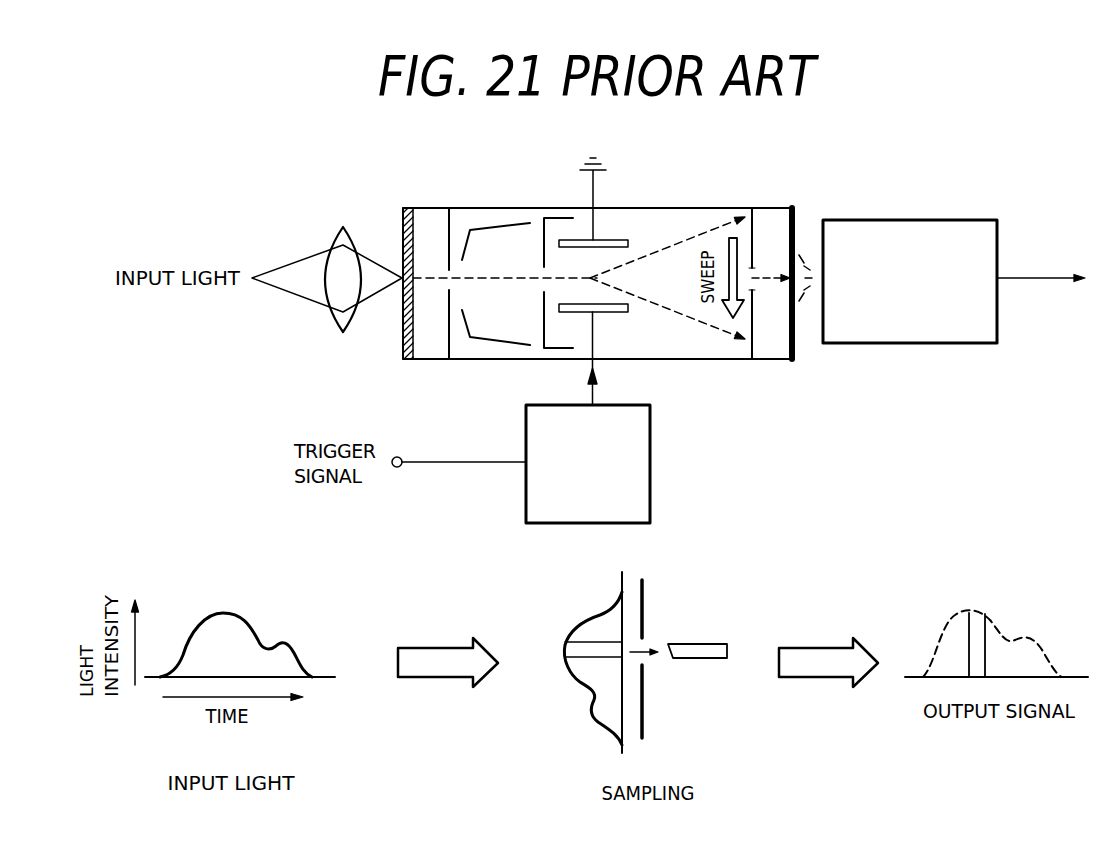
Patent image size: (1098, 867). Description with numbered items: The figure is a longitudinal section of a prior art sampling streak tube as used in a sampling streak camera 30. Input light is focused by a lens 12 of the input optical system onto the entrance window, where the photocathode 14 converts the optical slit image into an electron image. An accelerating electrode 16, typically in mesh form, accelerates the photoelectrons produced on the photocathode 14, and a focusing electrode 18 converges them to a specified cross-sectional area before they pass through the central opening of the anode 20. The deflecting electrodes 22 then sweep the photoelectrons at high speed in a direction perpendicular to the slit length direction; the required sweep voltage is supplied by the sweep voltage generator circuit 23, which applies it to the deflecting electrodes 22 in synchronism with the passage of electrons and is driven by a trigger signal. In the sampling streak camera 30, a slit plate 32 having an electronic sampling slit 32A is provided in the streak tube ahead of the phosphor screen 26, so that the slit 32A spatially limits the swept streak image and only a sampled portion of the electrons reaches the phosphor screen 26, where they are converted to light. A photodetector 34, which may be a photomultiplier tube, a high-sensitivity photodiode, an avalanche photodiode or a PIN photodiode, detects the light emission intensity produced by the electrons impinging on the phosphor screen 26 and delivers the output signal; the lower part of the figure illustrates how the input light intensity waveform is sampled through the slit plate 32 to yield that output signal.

The lens 12 is at (344, 226).
The photocathode 14 is at (406, 206).
The accelerating electrode 16 is at (449, 207).
The focusing electrode 18 is at (491, 228).
The anode 20 is at (543, 218).
The deflecting electrodes 22 is at (622, 240).
The sweep voltage generator circuit 23 is at (640, 405).
The phosphor screen 26 is at (797, 332).
The sampling streak camera 30 is at (712, 208).
The slit plate 32 is at (757, 352).
The electronic sampling slit 32A is at (757, 266).
The photodetector 34 is at (976, 219).